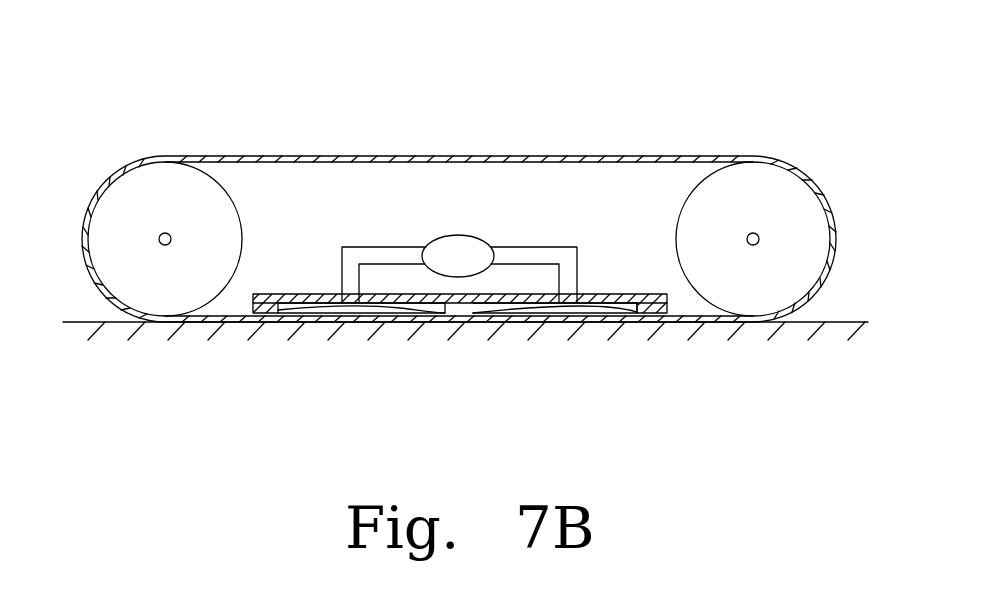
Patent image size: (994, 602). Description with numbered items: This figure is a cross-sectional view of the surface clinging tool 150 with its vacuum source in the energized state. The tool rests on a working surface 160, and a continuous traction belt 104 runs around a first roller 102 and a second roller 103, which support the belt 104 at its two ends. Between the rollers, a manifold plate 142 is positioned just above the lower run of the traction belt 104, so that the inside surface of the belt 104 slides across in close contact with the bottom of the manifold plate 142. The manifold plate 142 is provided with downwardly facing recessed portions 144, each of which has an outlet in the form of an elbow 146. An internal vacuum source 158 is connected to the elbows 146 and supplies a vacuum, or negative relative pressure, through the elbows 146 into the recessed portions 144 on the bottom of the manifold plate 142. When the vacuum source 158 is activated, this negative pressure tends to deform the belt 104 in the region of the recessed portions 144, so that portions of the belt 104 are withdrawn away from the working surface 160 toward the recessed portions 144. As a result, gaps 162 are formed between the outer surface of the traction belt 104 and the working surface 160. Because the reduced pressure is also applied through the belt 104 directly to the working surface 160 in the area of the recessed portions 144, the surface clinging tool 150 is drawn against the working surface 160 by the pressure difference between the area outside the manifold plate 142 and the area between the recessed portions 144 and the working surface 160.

The surface clinging tool 150 is at (219, 114).
The traction belt 104 is at (563, 156).
The first roller 102 is at (800, 232).
The second roller 103 is at (90, 266).
The working surface 160 is at (838, 322).
The manifold plate 142 is at (607, 293).
The recessed portion 144 is at (315, 318).
The gap 162 is at (388, 322).
The elbow 146 is at (378, 250).
The vacuum source 158 is at (458, 242).